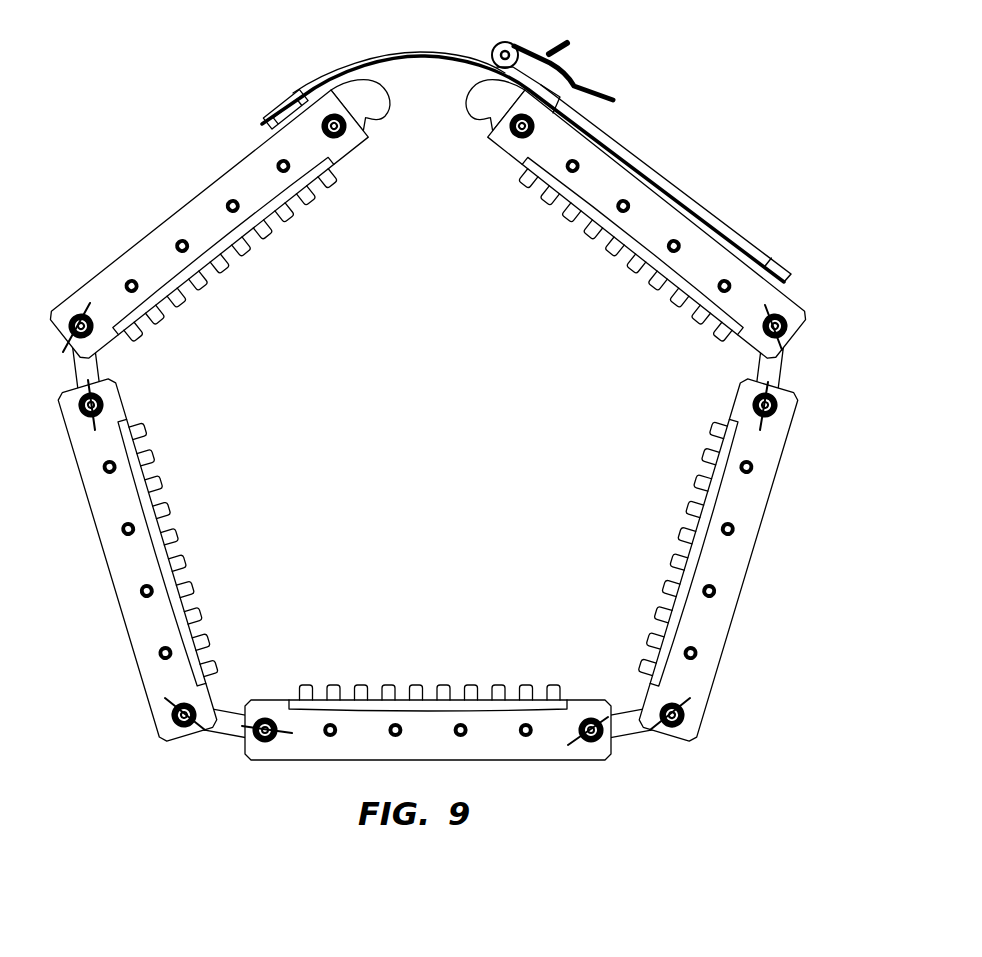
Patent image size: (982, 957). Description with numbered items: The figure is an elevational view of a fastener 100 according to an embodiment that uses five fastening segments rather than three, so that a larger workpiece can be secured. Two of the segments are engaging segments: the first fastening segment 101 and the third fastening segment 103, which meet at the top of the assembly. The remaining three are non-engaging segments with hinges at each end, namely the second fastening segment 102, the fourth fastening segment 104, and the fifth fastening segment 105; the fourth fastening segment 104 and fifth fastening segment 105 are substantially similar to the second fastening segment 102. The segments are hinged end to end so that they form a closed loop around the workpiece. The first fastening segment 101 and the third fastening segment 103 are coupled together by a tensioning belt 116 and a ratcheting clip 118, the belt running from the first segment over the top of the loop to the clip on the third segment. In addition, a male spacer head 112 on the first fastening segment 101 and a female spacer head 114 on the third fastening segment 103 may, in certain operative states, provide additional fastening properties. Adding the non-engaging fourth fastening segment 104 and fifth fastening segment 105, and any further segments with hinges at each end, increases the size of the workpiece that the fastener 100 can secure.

The fastener 100 is at (218, 72).
The first fastening segment 101 is at (131, 273).
The second fastening segment 102 is at (111, 513).
The third fastening segment 103 is at (710, 255).
The fourth fastening segment 104 is at (505, 720).
The fifth fastening segment 105 is at (753, 497).
The male spacer head 112 is at (357, 97).
The female spacer head 114 is at (480, 105).
The tensioning belt 116 is at (317, 80).
The ratcheting clip 118 is at (535, 67).